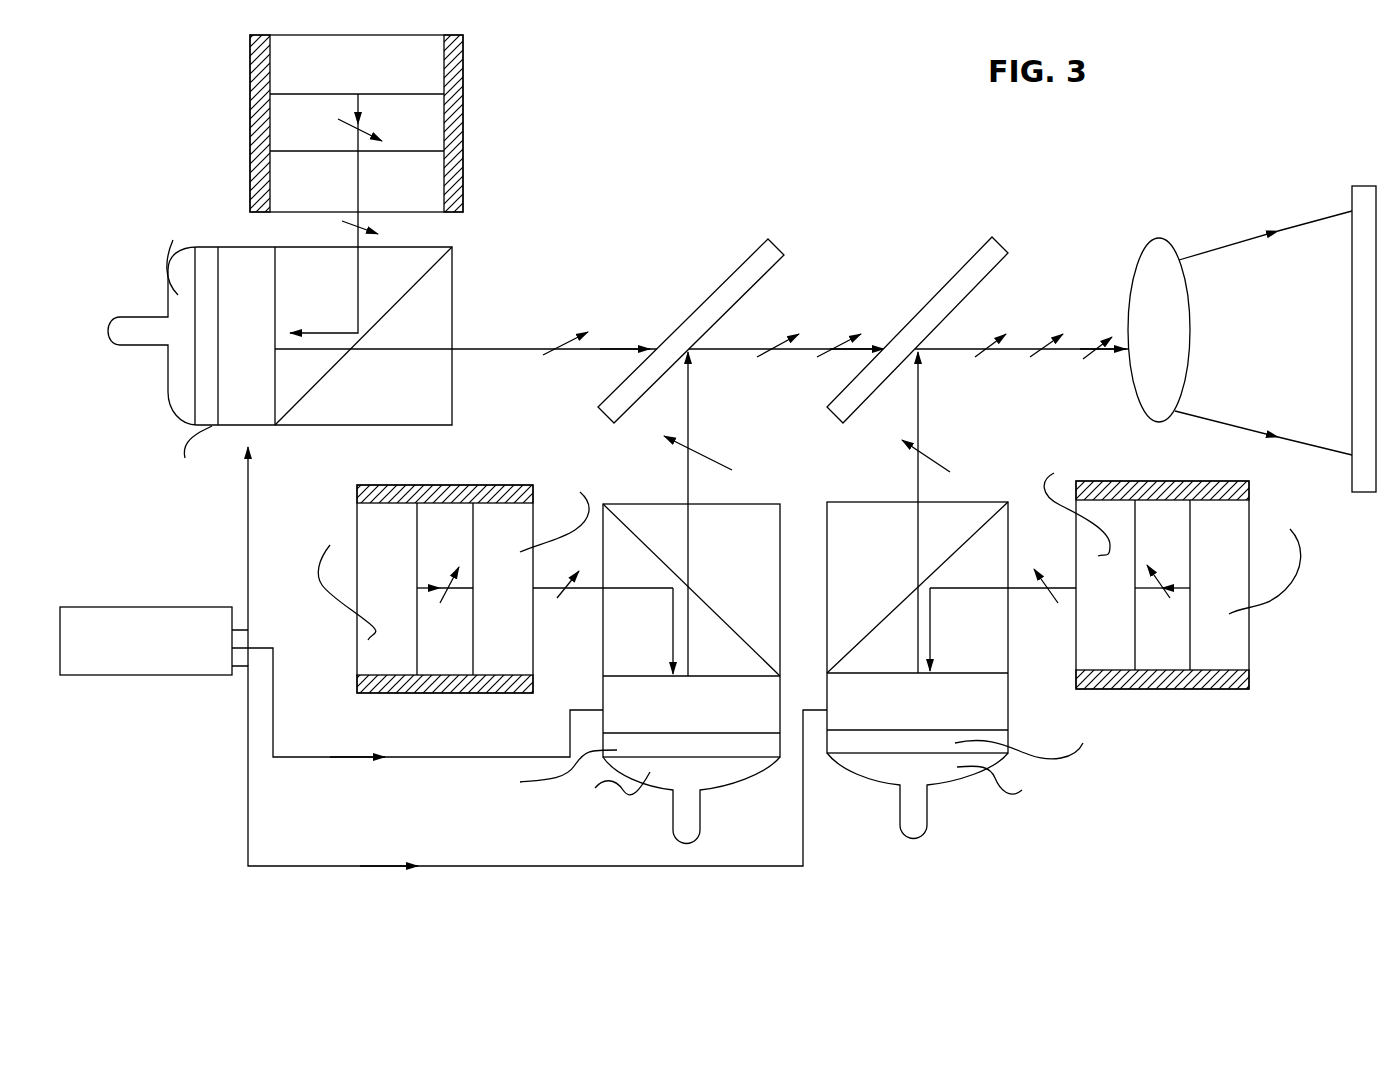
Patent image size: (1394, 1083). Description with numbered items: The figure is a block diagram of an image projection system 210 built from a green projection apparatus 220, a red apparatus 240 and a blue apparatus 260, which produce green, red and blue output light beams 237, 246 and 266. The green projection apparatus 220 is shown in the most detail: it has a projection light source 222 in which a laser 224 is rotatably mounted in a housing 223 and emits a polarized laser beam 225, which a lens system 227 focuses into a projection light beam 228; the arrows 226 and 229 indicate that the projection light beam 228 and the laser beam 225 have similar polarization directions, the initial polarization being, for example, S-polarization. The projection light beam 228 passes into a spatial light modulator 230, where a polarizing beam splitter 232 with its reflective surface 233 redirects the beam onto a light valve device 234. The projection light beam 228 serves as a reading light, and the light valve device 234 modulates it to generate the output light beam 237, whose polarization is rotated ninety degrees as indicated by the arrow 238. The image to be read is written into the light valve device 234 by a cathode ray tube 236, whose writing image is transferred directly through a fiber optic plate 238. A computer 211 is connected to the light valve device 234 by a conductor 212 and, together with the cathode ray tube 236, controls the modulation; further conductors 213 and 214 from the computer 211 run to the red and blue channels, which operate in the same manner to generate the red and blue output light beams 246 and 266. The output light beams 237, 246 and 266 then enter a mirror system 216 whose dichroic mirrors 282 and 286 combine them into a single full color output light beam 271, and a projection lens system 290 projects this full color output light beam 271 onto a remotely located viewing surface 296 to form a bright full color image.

The image projection system 210 is at (1319, 817).
The computer 211 is at (160, 657).
The conductor 212 is at (247, 572).
The red signal line 213 is at (274, 663).
The blue signal line 214 is at (247, 822).
The mirror system 216 is at (1066, 173).
The green projection apparatus 220 is at (618, 106).
The projection light source 222 is at (168, 92).
The housing 223 is at (250, 71).
The laser 224 is at (432, 52).
The laser beam 225 is at (372, 105).
The arrow 226 is at (352, 123).
The lens system 227 is at (423, 165).
The projection light beam 228 is at (238, 262).
The arrow 229 is at (380, 233).
The spatial light modulator 230 is at (556, 238).
The polarizing beam splitter 232 is at (405, 336).
The reflective surface 233 is at (418, 263).
The light valve device 234 is at (357, 262).
The cathode ray tube 236 is at (140, 327).
The green output light beam 237 is at (617, 348).
The fiber optic plate 238 is at (207, 405).
The red apparatus 240 is at (552, 826).
The red output light beam 246 is at (688, 473).
The blue apparatus 260 is at (1190, 746).
The blue output light beam 266 is at (918, 400).
The full color output light beam 271 is at (1062, 349).
The dichroic mirror 282 is at (757, 263).
The dichroic mirror 286 is at (984, 256).
The projection lens system 290 is at (1160, 237).
The viewing surface 296 is at (1368, 202).